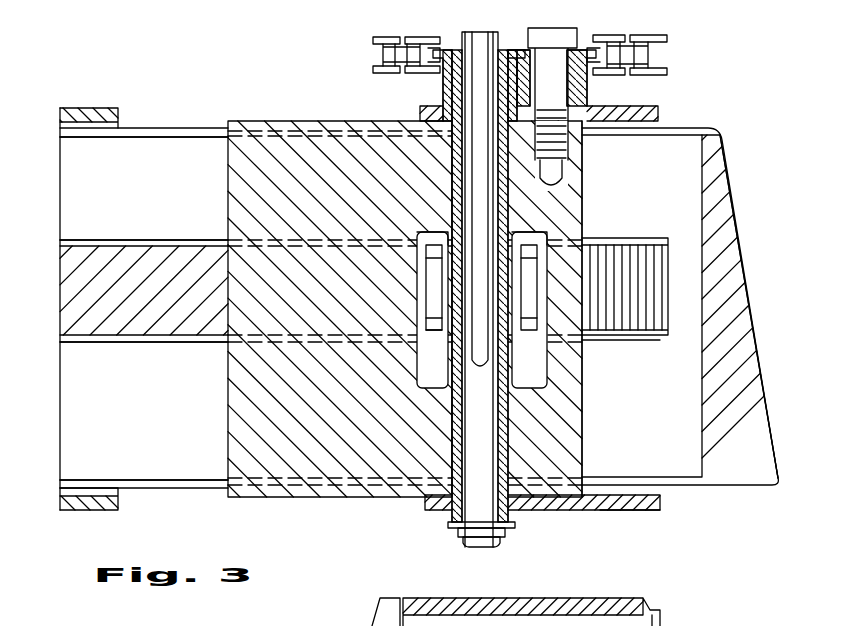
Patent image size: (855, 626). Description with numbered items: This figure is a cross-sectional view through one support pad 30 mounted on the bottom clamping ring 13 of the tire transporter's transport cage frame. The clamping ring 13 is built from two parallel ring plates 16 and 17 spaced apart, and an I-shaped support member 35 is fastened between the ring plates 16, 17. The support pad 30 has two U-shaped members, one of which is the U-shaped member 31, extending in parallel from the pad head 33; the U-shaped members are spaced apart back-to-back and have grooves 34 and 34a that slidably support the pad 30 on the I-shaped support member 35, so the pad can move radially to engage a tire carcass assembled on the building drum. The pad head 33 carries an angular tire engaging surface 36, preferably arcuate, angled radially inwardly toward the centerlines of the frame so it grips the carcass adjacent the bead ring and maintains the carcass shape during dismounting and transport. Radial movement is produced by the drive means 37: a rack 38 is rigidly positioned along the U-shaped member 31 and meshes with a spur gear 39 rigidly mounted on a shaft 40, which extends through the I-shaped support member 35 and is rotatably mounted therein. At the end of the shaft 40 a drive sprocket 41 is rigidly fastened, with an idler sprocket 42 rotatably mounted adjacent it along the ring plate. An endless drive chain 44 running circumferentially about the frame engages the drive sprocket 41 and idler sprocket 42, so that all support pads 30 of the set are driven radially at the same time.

The bottom clamping ring 13 is at (618, 520).
The ring plate 16 is at (652, 107).
The ring plate 17 is at (655, 507).
The support pad 30 is at (733, 408).
The U-shaped member 31 is at (75, 193).
The pad head 33 is at (740, 270).
The groove 34 is at (173, 488).
The groove 34a is at (168, 130).
The I-shaped support member 35 is at (360, 462).
The tire engaging surface 36 is at (753, 342).
The drive means 37 is at (462, 32).
The rack 38 is at (70, 318).
The spur gear 39 is at (528, 323).
The shaft 40 is at (495, 515).
The drive sprocket 41 is at (450, 80).
The idler sprocket 42 is at (555, 63).
The endless drive chain 44 is at (662, 63).